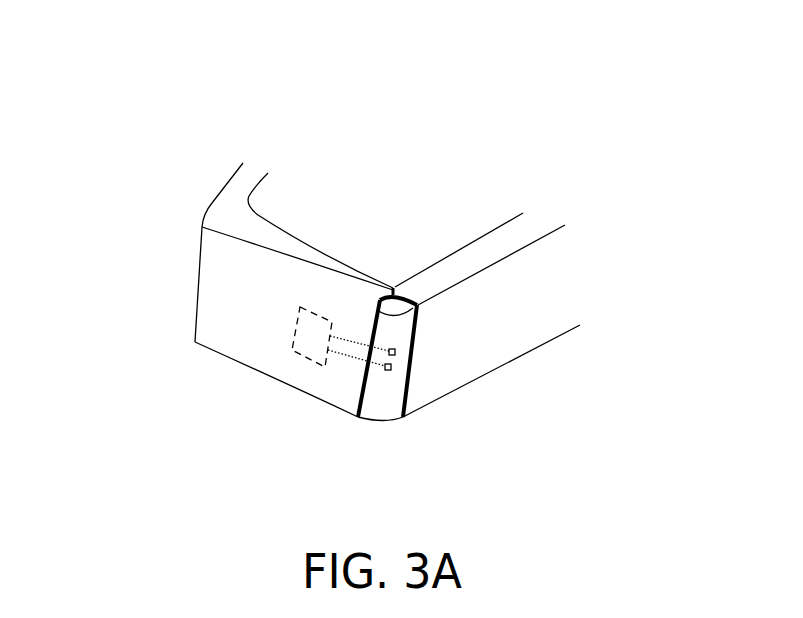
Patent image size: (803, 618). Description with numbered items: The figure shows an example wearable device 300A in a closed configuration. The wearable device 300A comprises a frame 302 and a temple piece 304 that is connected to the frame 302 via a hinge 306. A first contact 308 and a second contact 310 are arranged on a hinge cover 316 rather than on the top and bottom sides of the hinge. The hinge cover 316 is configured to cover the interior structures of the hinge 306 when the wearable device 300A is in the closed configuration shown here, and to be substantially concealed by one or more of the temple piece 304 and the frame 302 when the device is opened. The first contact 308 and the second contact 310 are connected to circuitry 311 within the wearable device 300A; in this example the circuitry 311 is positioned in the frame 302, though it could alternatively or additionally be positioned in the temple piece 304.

The wearable device 300A is at (93, 110).
The frame 302 is at (197, 287).
The temple piece 304 is at (530, 245).
The hinge 306 is at (395, 272).
The first contact 308 is at (396, 352).
The second contact 310 is at (392, 367).
The circuitry 311 is at (292, 342).
The hinge cover 316 is at (387, 421).